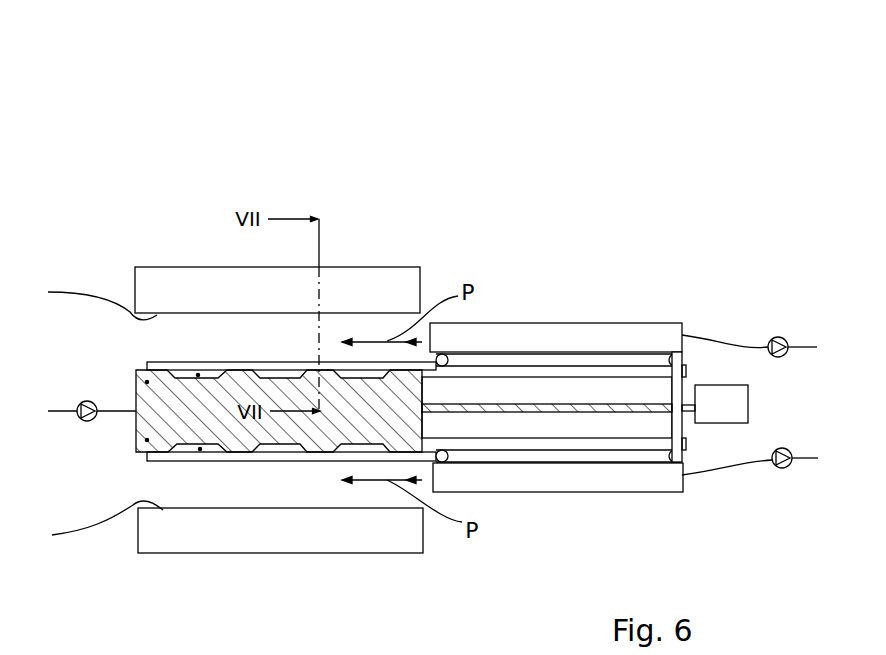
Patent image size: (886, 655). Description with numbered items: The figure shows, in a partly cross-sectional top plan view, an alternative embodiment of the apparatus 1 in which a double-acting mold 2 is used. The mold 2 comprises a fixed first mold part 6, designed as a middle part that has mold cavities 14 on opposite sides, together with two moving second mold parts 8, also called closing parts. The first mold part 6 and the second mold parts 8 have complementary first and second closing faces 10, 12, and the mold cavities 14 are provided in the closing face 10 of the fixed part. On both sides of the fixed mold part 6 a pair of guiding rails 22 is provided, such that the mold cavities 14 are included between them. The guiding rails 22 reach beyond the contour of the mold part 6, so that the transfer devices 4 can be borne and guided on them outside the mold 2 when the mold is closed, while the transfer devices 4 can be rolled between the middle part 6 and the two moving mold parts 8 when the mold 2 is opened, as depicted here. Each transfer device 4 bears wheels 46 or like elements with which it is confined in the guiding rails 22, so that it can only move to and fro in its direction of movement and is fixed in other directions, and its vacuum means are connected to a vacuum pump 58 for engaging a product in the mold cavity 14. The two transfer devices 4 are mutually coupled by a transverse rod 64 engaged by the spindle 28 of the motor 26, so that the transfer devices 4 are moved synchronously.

The apparatus 1 is at (527, 265).
The mold 2 is at (111, 341).
The transfer device 4 is at (699, 294).
The first mold part 6 is at (279, 411).
The second mold part 8 is at (279, 410).
The first closing face 10 is at (147, 382).
The second closing face 12 is at (92, 414).
The mold cavity 14 is at (198, 375).
The guiding rail 22 is at (283, 461).
The motor 26 is at (748, 402).
The spindle 28 is at (563, 412).
The wheels 46 is at (682, 357).
The vacuum pump 58 is at (785, 340).
The transverse rod 64 is at (670, 423).